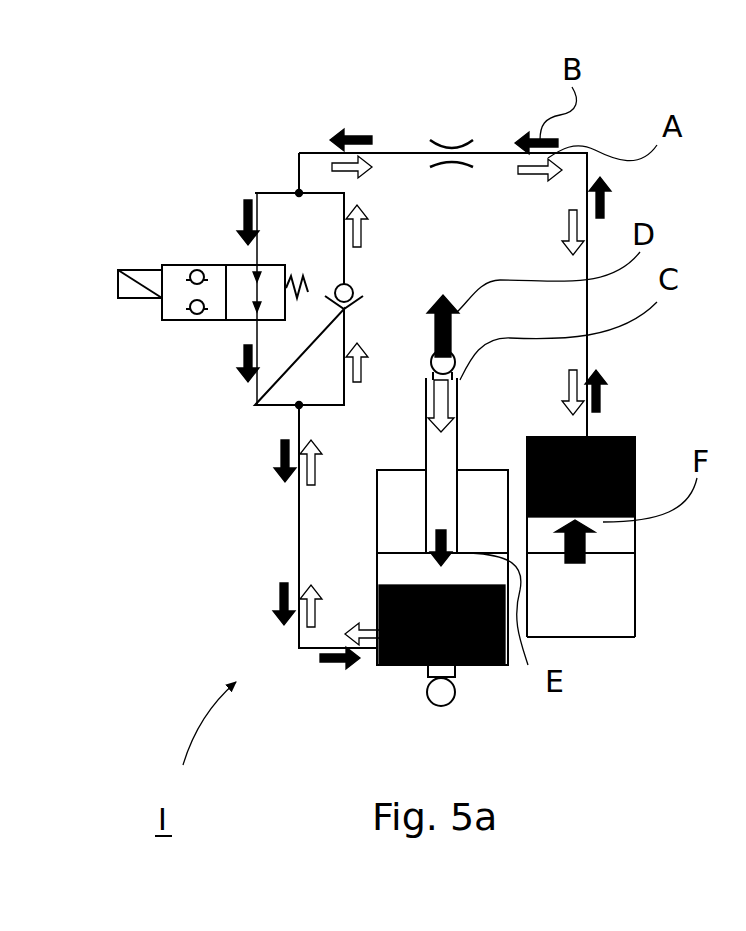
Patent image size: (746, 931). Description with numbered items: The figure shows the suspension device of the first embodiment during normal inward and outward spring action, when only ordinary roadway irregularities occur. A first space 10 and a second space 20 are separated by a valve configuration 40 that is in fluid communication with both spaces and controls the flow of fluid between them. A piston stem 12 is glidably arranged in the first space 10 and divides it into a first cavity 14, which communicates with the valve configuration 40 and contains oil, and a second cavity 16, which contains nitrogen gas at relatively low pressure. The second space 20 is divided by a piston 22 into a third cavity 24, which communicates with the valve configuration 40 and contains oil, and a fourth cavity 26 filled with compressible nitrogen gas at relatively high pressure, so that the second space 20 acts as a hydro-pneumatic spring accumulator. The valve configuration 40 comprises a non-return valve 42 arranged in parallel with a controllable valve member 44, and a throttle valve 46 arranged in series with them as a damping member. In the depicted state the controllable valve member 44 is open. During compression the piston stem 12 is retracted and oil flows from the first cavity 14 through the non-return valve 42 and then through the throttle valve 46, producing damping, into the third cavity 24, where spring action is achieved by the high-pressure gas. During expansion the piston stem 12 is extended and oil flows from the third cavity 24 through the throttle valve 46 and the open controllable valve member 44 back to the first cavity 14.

The first space 10 is at (483, 668).
The piston stem 12 is at (427, 417).
The first cavity 14 is at (375, 603).
The second cavity 16 is at (403, 493).
The second space 20 is at (568, 645).
The piston 22 is at (620, 540).
The third cavity 24 is at (598, 437).
The fourth cavity 26 is at (600, 620).
The valve configuration 40 is at (433, 127).
The non-return valve 42 is at (344, 273).
The controllable valve member 44 is at (225, 330).
The throttle valve 46 is at (460, 140).